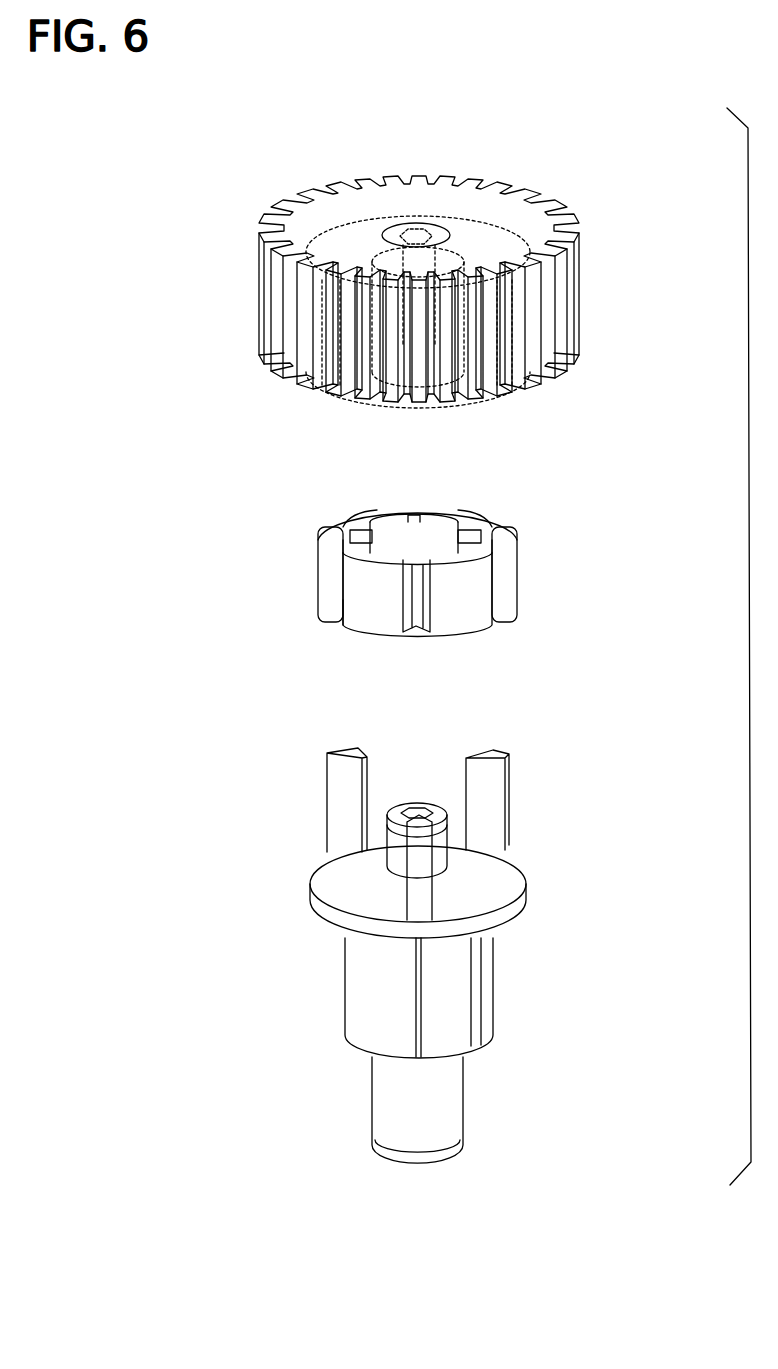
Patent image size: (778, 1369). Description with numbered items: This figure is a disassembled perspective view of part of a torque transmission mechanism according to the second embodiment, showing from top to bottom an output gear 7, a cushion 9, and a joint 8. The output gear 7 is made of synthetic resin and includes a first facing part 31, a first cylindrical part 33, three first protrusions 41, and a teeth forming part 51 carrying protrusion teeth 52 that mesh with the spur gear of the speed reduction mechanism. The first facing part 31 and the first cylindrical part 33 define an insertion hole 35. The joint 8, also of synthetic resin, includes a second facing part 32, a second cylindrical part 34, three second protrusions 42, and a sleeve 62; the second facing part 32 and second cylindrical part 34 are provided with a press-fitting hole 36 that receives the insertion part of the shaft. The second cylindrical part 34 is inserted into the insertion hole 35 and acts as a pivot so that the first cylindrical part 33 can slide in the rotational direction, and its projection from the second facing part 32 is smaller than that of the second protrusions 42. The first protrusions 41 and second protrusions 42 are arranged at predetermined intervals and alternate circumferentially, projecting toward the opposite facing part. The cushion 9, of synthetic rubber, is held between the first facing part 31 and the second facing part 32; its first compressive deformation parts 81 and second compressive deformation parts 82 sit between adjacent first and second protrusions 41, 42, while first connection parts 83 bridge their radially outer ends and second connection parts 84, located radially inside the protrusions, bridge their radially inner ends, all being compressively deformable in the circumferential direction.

The output gear 7 is at (272, 192).
The joint 8 is at (307, 860).
The cushion 9 is at (308, 565).
The first facing part 31 is at (485, 200).
The second facing part 32 is at (490, 897).
The first cylindrical part 33 is at (495, 258).
The second cylindrical part 34 is at (440, 855).
The insertion hole 35 is at (395, 232).
The press-fitting hole 36 is at (420, 805).
The first protrusions 41 is at (433, 232).
The second protrusions 42 is at (327, 785).
The teeth forming part 51 is at (545, 228).
The protrusion teeth 52 is at (566, 300).
The sleeve 62 is at (460, 1100).
The first compressive deformation parts 81 is at (395, 628).
The second compressive deformation parts 82 is at (336, 625).
The first connection parts 83 is at (322, 535).
The second connection parts 84 is at (362, 532).